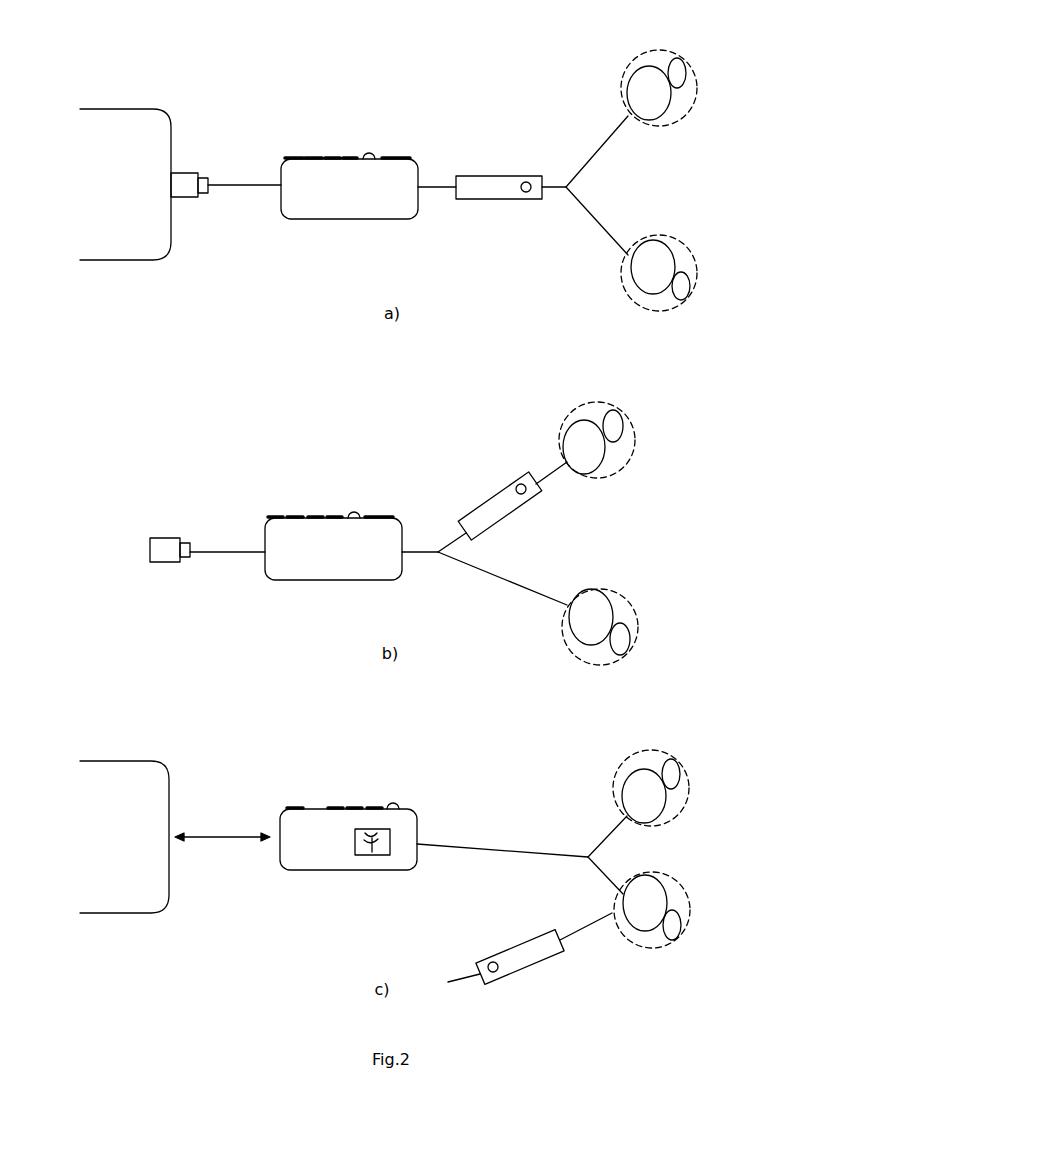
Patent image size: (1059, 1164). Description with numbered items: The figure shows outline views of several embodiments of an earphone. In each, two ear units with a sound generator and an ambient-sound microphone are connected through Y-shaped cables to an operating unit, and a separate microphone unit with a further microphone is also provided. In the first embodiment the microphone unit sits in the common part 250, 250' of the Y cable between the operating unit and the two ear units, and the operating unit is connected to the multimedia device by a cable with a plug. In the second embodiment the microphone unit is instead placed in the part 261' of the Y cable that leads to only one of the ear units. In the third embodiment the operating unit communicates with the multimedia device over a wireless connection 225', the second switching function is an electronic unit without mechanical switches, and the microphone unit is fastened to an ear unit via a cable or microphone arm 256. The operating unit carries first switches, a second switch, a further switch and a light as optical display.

The wireless connection 225' is at (222, 869).
The common part of Y cable 250 is at (444, 159).
The common part of Y cable 250' is at (546, 156).
The cable or microphone arm 256 is at (577, 923).
The part of Y cable 261' is at (440, 519).